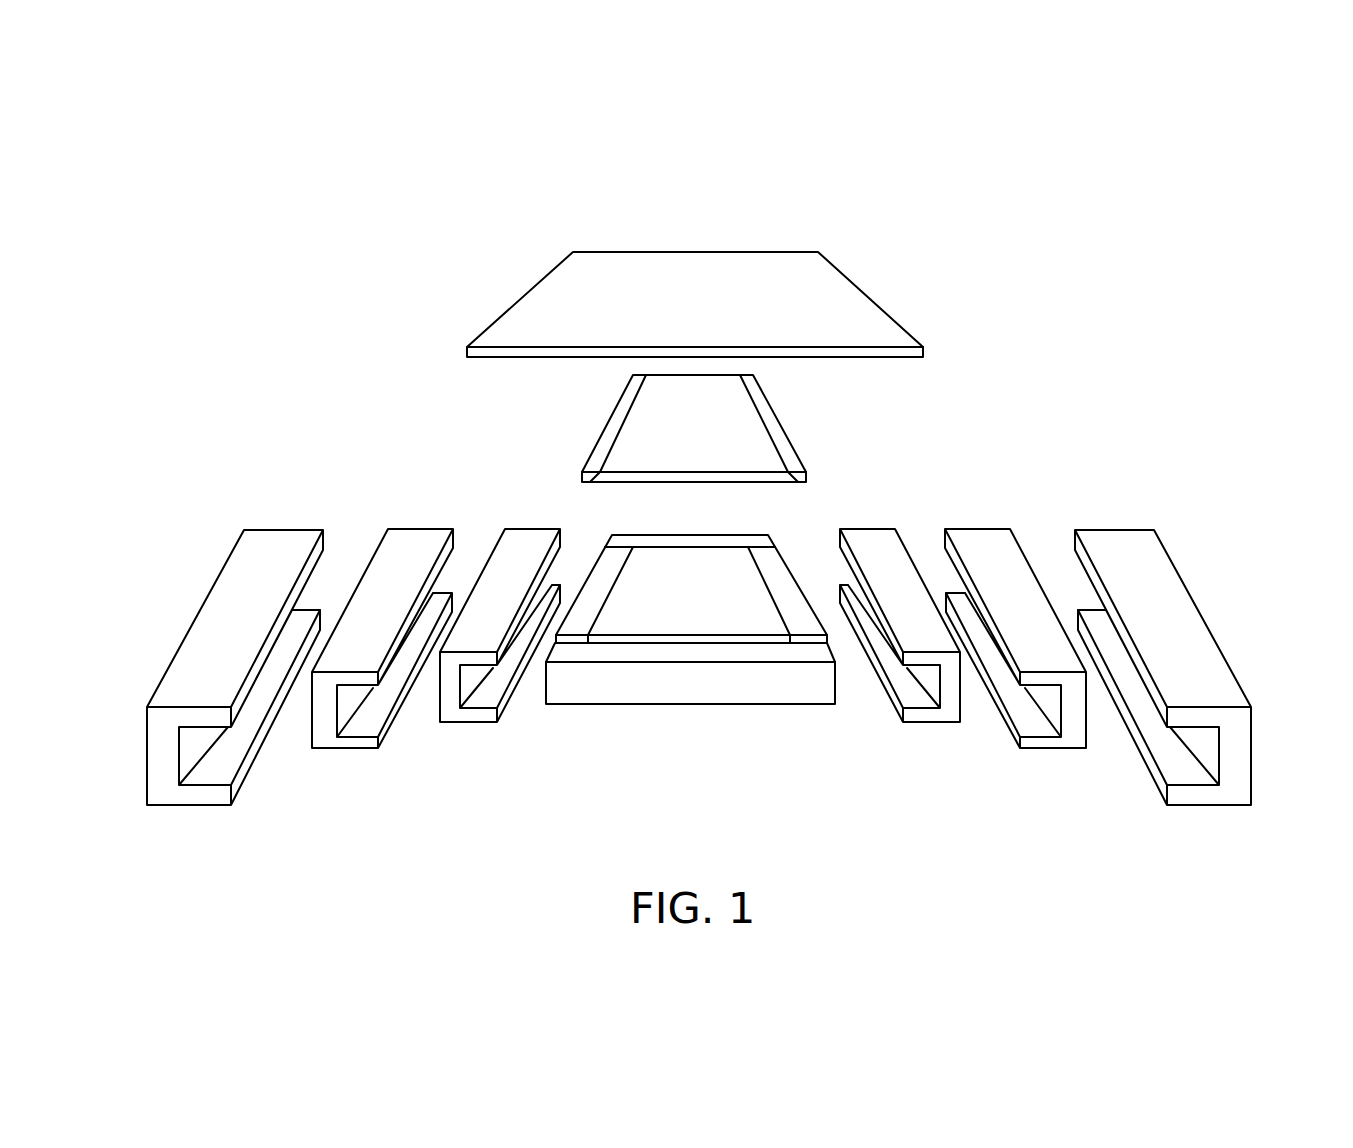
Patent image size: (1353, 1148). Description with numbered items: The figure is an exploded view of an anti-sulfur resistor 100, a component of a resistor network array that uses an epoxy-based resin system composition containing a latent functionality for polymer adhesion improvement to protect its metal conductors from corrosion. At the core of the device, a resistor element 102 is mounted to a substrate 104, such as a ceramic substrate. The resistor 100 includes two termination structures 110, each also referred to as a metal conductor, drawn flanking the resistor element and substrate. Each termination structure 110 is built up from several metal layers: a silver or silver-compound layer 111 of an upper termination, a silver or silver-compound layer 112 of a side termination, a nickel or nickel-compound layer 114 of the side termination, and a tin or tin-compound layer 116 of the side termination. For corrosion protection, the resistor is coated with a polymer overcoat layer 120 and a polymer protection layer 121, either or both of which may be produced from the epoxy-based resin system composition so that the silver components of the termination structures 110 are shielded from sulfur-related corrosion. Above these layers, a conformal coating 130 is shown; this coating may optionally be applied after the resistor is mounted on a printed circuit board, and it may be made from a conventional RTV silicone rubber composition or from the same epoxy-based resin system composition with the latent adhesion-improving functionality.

The anti-sulfur resistor 100 is at (334, 163).
The conformal coating 130 is at (718, 305).
The polymer overcoat layer 120 is at (716, 434).
The polymer protection layer 121 is at (603, 452).
The resistor element 102 is at (713, 607).
The Ag layer of upper termination 111 is at (570, 638).
The substrate 104 is at (662, 683).
The termination structure 110 is at (640, 513).
The Ag layer of side termination 112 is at (472, 715).
The Ni layer of side termination 114 is at (348, 743).
The Sn layer of side termination 116 is at (193, 795).